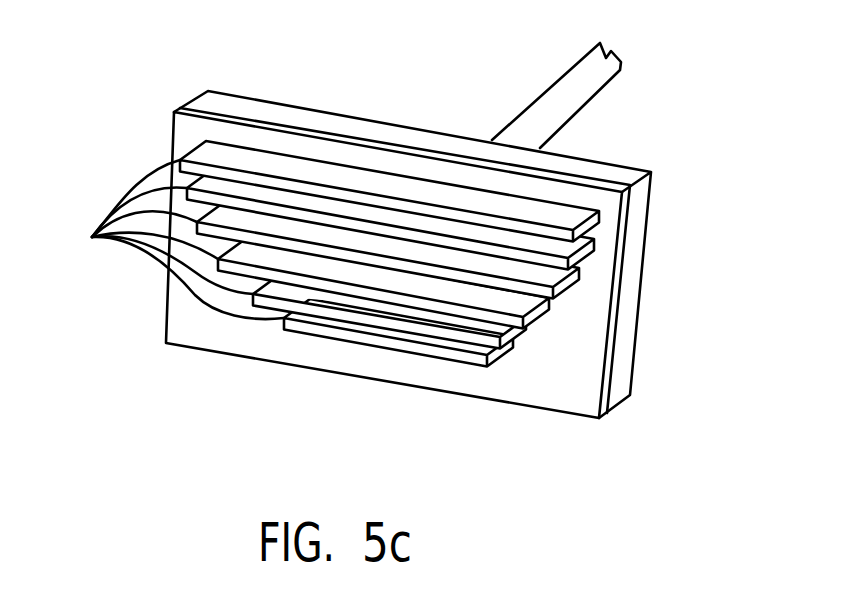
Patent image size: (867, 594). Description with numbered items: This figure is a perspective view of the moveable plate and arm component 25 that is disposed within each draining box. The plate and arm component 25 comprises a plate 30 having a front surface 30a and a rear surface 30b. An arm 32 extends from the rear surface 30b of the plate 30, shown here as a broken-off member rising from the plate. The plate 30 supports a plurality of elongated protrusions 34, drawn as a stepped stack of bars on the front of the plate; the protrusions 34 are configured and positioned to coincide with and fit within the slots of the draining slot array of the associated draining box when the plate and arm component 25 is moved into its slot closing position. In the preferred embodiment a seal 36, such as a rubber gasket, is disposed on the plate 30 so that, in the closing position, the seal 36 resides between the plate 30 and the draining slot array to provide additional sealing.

The plate and arm component 25 is at (642, 115).
The plate 30 is at (636, 247).
The front surface 30a is at (220, 345).
The rear surface 30b is at (633, 371).
The arm 32 is at (557, 90).
The elongated protrusions 34 is at (92, 237).
The seal 36 is at (597, 308).